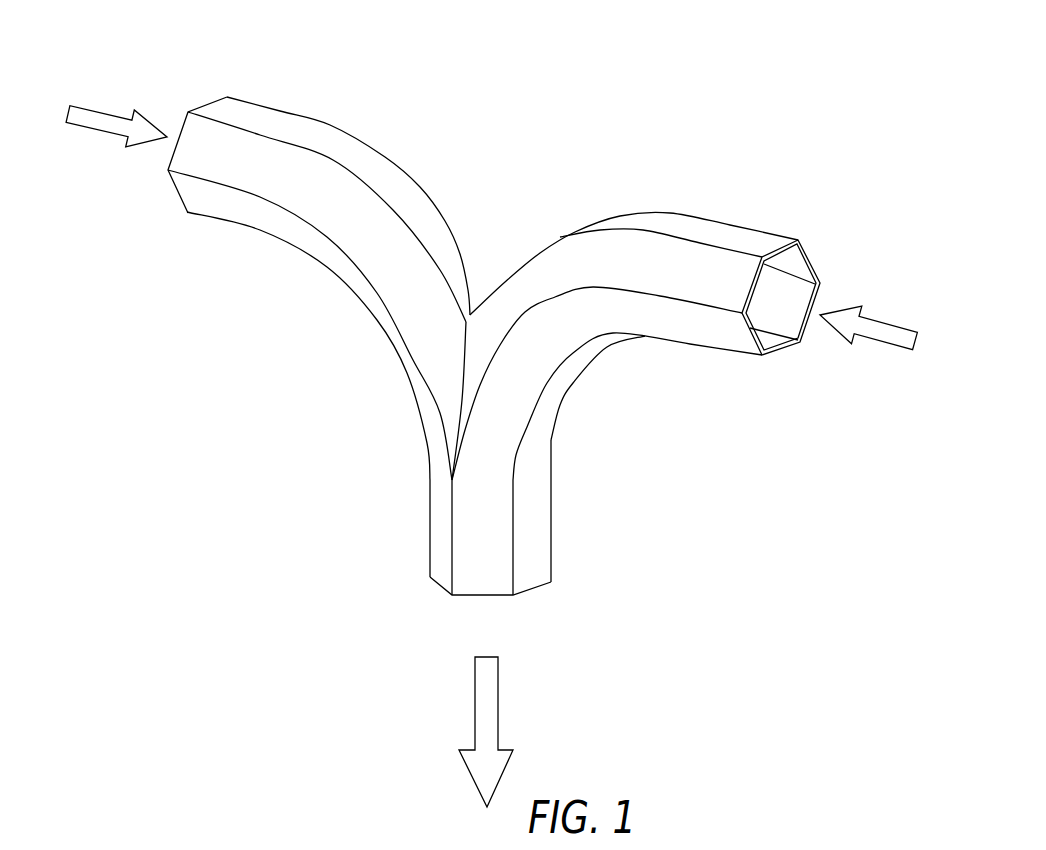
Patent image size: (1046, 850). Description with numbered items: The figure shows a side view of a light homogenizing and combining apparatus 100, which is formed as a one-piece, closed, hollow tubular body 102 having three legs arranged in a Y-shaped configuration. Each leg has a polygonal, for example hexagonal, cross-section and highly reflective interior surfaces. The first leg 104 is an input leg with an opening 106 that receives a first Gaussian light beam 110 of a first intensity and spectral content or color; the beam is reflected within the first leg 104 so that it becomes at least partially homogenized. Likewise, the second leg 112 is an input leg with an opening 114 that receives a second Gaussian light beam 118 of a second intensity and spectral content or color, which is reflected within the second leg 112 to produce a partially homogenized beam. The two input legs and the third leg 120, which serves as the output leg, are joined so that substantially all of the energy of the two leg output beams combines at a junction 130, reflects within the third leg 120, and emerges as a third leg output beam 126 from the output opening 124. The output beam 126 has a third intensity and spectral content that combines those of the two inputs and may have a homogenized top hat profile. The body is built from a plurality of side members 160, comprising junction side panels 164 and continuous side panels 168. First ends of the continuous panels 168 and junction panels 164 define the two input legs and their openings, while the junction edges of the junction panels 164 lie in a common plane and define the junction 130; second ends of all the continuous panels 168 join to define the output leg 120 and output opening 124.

The light homogenizing and combining apparatus 100 is at (582, 102).
The tubular body 102 is at (358, 133).
The first leg 104 is at (265, 105).
The opening 106 is at (207, 103).
The first Gaussian light beam 110 is at (93, 110).
The second leg 112 is at (752, 228).
The opening 114 is at (813, 257).
The second Gaussian light beam 118 is at (887, 320).
The third leg 120 is at (555, 505).
The output opening 124 is at (440, 587).
The third leg output beam 126 is at (475, 707).
The junction 130 is at (478, 297).
The side members 160 is at (713, 290).
The junction side panels 164 is at (418, 195).
The continuous side panels 168 is at (360, 278).